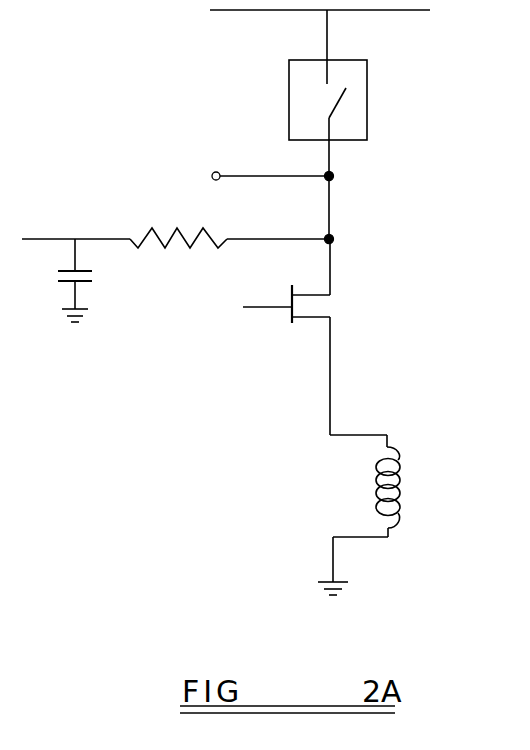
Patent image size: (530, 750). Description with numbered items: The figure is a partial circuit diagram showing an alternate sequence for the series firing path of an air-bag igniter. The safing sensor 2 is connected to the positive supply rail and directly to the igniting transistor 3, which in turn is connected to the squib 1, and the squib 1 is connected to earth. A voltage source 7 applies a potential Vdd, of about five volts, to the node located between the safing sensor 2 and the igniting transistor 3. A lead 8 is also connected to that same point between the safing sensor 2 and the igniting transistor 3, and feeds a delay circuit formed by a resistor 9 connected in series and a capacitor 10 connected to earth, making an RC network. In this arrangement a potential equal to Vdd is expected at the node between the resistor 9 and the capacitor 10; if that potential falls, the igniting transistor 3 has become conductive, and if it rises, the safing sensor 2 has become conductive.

The squib 1 is at (398, 487).
The safing sensor switch 2 is at (367, 112).
The igniting transistor 3 is at (318, 307).
The voltage source 7 is at (240, 175).
The lead 8 is at (290, 234).
The resistor 9 is at (190, 246).
The capacitor 10 is at (92, 281).